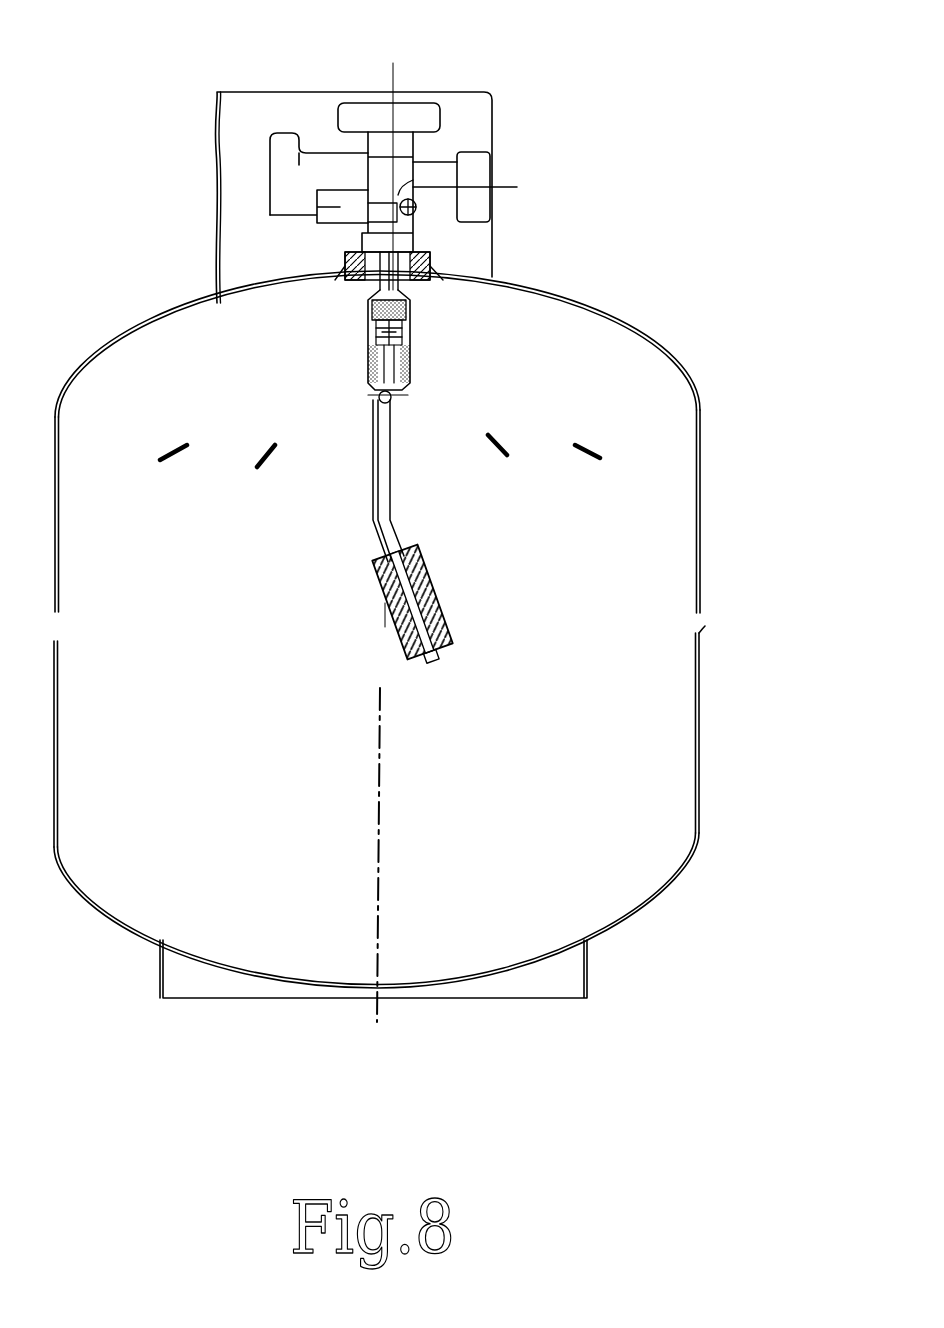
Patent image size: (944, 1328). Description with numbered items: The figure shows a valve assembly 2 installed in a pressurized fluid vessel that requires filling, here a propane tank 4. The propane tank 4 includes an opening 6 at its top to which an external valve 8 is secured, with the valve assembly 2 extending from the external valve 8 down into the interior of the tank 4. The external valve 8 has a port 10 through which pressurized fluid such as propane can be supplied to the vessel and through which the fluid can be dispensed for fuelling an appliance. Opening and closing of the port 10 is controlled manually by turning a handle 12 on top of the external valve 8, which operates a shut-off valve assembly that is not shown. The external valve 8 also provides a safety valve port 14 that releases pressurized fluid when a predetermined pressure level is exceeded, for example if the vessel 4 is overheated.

The valve assembly 2 is at (473, 370).
The propane tank 4 is at (642, 332).
The opening 6 is at (433, 272).
The external valve 8 is at (528, 100).
The port 10 is at (487, 165).
The handle 12 is at (415, 108).
The safety valve port 14 is at (270, 183).